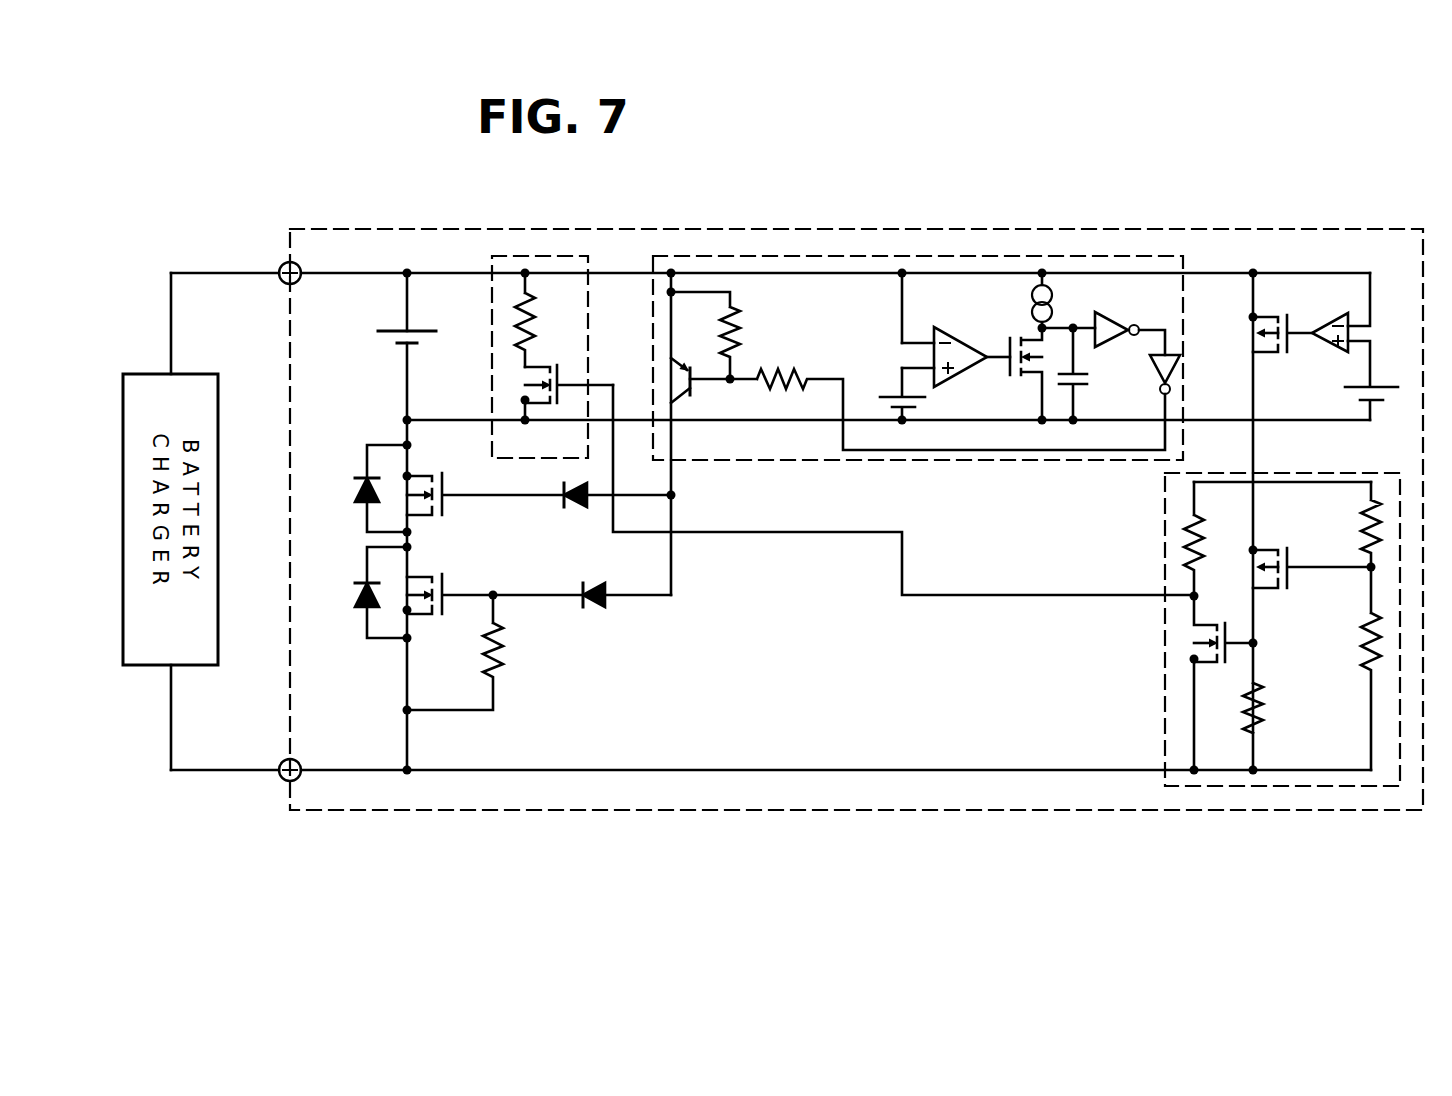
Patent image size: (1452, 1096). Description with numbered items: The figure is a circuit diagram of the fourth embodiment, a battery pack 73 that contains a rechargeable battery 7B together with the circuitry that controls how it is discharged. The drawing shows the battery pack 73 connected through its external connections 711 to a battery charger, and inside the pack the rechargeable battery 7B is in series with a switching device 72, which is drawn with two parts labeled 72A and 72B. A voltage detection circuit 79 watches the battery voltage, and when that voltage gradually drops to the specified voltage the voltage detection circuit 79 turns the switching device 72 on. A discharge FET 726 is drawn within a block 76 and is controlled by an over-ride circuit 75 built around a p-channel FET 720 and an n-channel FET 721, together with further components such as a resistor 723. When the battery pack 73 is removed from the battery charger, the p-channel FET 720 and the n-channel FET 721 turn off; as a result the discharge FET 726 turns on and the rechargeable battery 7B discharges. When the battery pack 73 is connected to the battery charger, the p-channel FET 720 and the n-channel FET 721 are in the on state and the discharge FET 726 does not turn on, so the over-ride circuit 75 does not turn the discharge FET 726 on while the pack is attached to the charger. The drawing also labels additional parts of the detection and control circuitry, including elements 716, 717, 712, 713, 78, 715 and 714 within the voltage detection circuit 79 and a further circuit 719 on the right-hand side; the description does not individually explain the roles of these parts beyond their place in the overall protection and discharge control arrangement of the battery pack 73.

The external terminals 711 is at (282, 262).
The rechargeable battery 7B is at (383, 333).
The switching device 72 is at (449, 545).
The discharge control FET 72A is at (386, 641).
The charge control FET 72B is at (392, 452).
The battery pack 73 is at (583, 811).
The pull-down circuit 76 is at (583, 311).
The discharge FET 726 is at (538, 365).
The voltage detection circuit 79 is at (817, 254).
The PNP transistor 716 is at (697, 388).
The reference voltage source 717 is at (883, 394).
The comparator 712 is at (973, 320).
The FET 713 is at (1023, 375).
The constant current source 78 is at (1040, 284).
The inverters 715 is at (1165, 323).
The capacitor 714 is at (1082, 389).
The overcharge detection circuit 719 is at (1300, 264).
The over-ride circuit 75 is at (1286, 470).
The resistor 723 is at (1186, 542).
The n-channel FET 721 is at (1192, 650).
The p-channel FET 720 is at (1273, 590).